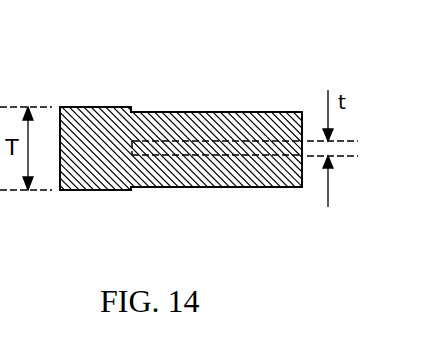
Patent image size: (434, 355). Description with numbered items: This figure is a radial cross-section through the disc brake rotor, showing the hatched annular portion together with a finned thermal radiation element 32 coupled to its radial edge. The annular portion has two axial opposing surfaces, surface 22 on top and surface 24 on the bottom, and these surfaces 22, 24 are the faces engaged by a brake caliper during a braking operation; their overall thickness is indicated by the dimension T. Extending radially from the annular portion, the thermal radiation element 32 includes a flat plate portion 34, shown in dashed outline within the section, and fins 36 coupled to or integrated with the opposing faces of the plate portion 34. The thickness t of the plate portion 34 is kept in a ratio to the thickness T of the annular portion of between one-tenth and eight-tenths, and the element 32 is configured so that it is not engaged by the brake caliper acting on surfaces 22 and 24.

The surface 22 is at (92, 107).
The surface 24 is at (85, 191).
The finned thermal radiation element 32 is at (163, 100).
The flat plate portion 34 is at (245, 147).
The fins 36 is at (213, 123).